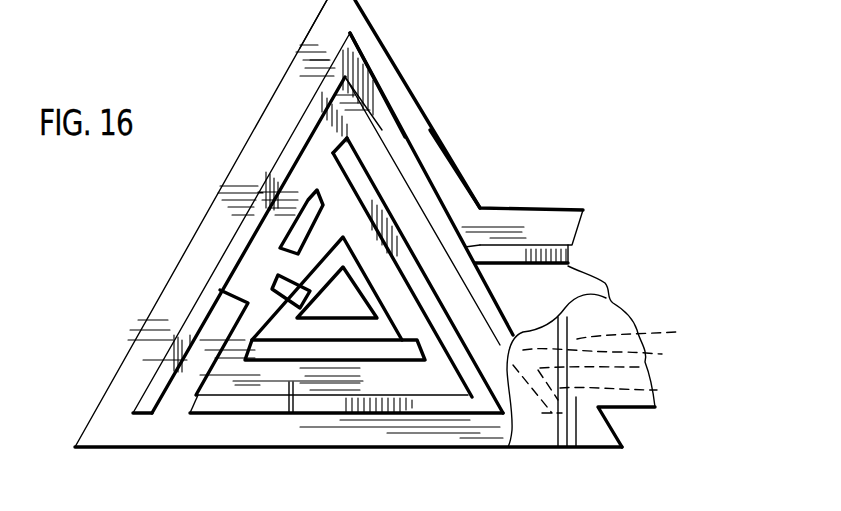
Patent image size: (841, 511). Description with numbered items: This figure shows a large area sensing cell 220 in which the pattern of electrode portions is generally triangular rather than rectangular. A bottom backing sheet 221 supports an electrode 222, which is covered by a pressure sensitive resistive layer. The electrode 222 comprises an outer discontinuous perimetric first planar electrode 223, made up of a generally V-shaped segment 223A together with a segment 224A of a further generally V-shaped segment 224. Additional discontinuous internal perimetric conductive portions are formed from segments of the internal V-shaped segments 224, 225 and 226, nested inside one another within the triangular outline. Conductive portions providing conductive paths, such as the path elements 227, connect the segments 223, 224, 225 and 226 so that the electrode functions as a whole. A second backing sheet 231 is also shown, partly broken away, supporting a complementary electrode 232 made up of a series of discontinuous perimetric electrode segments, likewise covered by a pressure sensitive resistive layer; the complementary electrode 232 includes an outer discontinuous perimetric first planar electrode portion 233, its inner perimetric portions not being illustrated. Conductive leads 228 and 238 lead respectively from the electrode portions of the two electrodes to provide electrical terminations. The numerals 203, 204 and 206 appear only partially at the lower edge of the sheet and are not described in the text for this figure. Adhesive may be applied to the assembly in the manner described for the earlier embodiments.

The large area sensing cell 220 is at (283, 38).
The bottom backing sheet 221 is at (130, 380).
The electrode 222 is at (460, 163).
The outer discontinuous perimetric first planar electrode 223 is at (424, 132).
The generally V-shaped segment 223A is at (300, 115).
The further generally V-shaped segment 224 is at (405, 195).
The segment 224A is at (368, 415).
The internal V-shaped segment 225 is at (300, 245).
The internal V-shaped segment 226 is at (313, 298).
The path elements 227 is at (294, 282).
The conductive lead 228 is at (548, 248).
The second backing sheet 231 is at (604, 318).
The complementary electrode 232 is at (657, 390).
The outer discontinuous perimetric first planar electrode portion 233 is at (653, 332).
The conductive lead 238 is at (660, 354).
The layer 203 is at (165, 503).
The layer 204 is at (293, 503).
The layer 206 is at (383, 503).